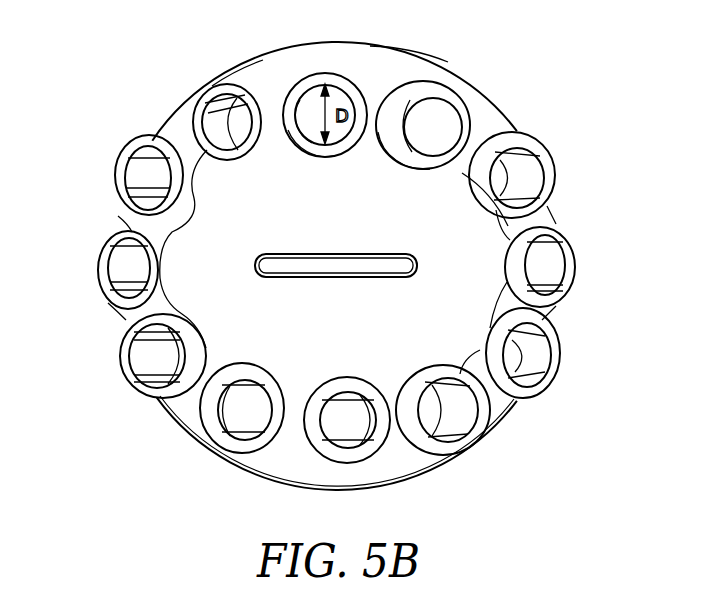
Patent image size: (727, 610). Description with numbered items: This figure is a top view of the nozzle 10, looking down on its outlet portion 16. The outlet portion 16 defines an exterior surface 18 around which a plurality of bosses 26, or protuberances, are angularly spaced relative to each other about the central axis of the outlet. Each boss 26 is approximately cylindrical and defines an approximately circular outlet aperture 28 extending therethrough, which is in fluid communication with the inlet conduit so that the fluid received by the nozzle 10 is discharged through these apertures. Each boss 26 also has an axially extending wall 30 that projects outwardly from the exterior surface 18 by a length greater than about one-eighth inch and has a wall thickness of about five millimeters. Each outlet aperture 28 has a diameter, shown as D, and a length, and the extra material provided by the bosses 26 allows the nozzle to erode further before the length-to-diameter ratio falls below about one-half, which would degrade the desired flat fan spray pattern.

The nozzle 10 is at (99, 87).
The outlet portion 16 is at (386, 64).
The exterior surface 18 is at (195, 248).
The boss 26 is at (240, 76).
The outlet aperture 28 is at (508, 182).
The axially extending wall 30 is at (452, 96).